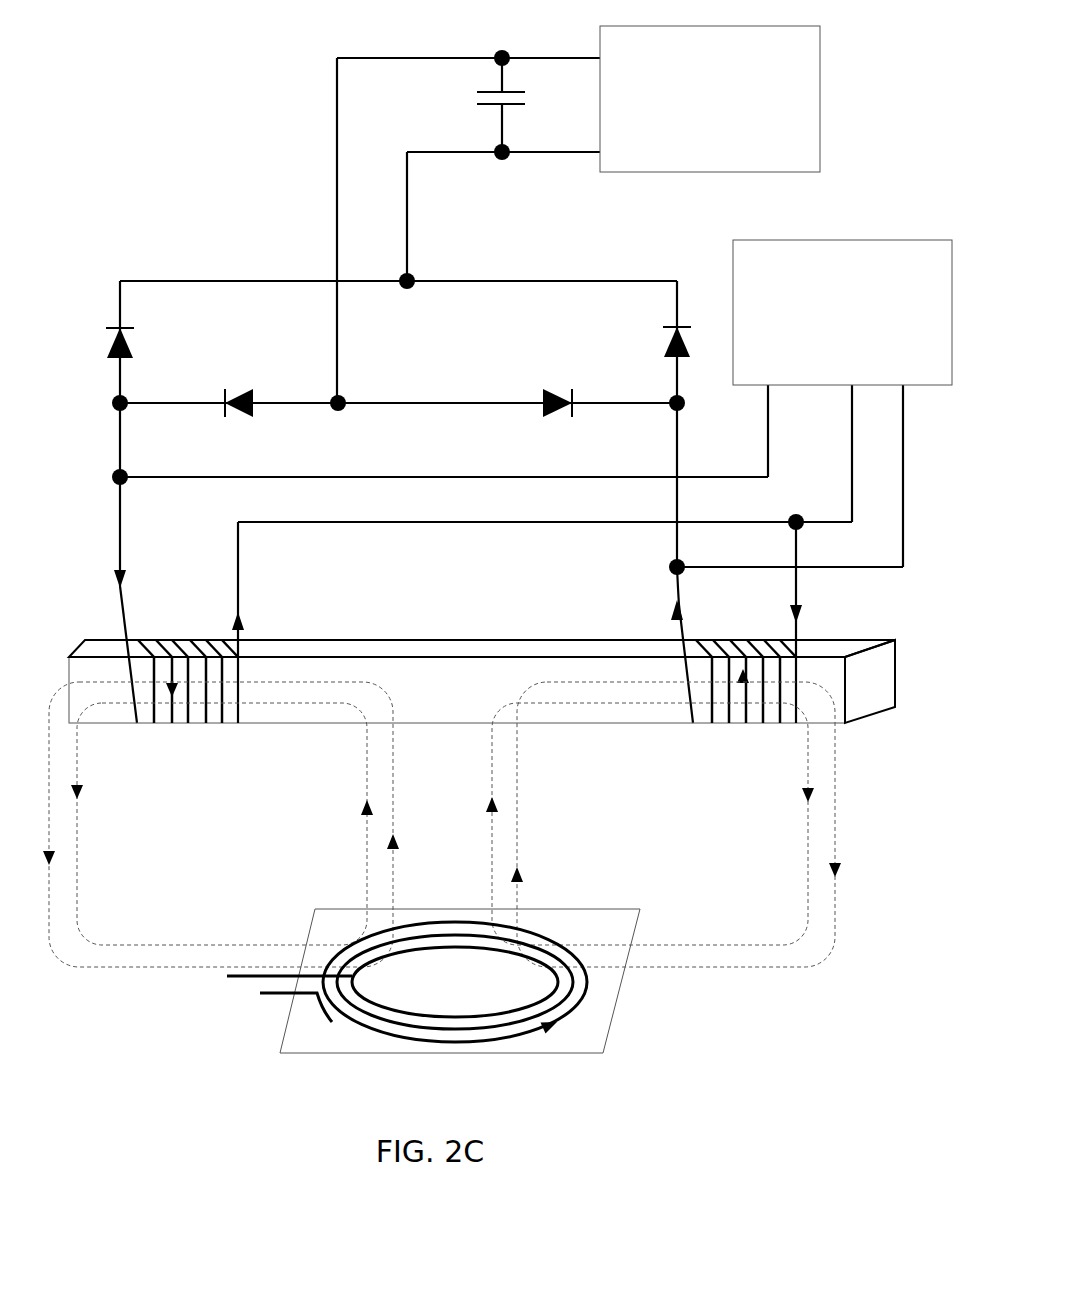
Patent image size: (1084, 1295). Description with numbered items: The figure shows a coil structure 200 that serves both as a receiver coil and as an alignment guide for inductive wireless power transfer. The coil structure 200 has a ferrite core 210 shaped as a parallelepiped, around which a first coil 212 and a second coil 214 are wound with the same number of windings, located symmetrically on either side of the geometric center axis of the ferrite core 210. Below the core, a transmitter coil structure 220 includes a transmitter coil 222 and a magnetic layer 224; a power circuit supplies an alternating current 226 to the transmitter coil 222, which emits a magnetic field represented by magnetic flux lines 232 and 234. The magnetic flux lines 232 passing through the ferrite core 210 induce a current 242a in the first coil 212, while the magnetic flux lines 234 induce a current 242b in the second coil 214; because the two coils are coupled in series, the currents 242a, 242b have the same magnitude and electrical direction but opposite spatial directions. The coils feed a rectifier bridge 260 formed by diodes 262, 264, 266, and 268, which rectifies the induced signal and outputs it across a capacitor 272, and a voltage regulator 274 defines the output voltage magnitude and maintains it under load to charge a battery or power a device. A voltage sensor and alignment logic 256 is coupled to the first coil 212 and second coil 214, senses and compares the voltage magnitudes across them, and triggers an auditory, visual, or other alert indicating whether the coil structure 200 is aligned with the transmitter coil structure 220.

The coil structure 200 is at (516, 665).
The ferrite core 210 is at (395, 640).
The first coil 212 is at (187, 729).
The second coil 214 is at (742, 737).
The transmitter coil structure 220 is at (419, 1036).
The transmitter coil 222 is at (302, 1053).
The magnetic layer 224 is at (365, 1032).
The alternating current 226 is at (512, 1042).
The magnetic flux lines 232 is at (98, 970).
The magnetic flux lines 234 is at (690, 970).
The current 242a is at (240, 625).
The current 242b is at (800, 612).
The voltage sensor and alignment logic 256 is at (866, 240).
The rectifier bridge 260 is at (481, 386).
The diode 262 is at (107, 342).
The diode 264 is at (237, 390).
The diode 266 is at (548, 392).
The diode 268 is at (663, 340).
The capacitor 272 is at (490, 100).
The voltage regulator 274 is at (632, 173).